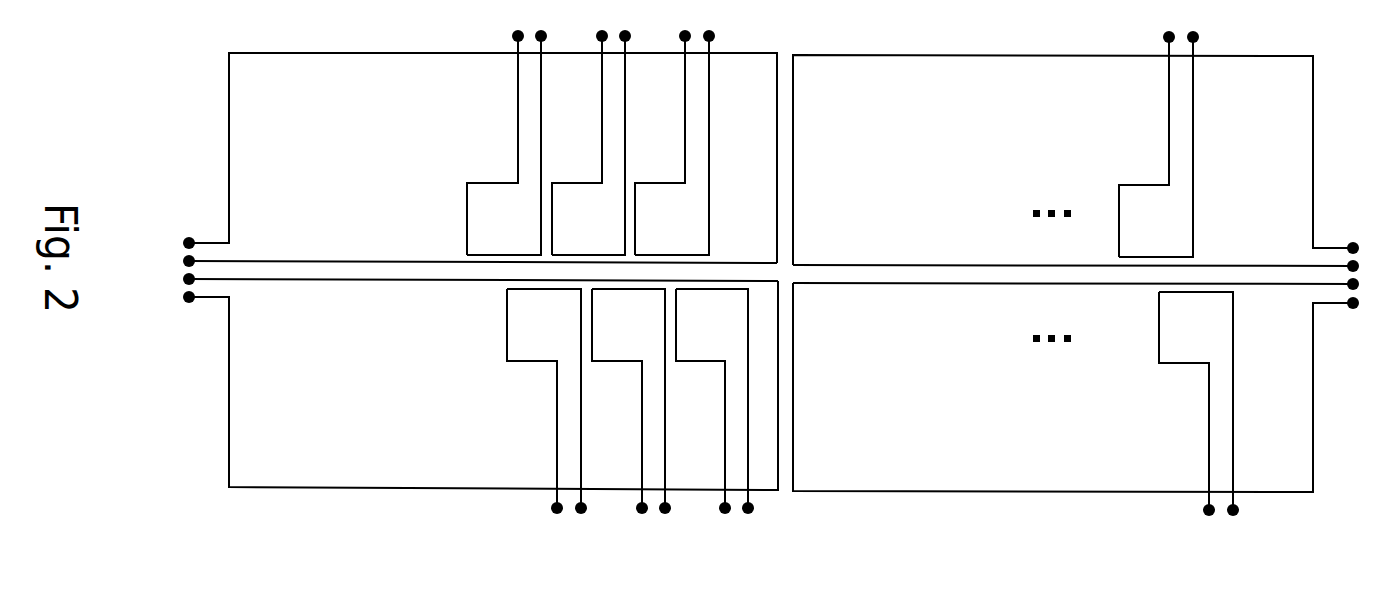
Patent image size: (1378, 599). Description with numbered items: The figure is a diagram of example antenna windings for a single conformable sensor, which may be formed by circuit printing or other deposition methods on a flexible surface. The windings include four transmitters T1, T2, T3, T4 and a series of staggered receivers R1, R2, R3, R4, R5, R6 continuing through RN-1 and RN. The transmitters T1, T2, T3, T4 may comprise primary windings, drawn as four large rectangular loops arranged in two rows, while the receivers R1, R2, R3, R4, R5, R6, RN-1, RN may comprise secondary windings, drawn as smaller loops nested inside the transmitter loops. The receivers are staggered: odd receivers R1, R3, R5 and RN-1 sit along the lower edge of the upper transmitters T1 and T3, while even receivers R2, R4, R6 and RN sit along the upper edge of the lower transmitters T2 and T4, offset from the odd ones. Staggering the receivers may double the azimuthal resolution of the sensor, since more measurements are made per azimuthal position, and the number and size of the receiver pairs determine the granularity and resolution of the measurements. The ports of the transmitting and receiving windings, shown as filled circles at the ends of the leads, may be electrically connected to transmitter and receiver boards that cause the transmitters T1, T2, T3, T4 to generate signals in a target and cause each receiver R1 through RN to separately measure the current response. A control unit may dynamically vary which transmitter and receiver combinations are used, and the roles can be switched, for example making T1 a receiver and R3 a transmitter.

The transmitter T1 is at (480, 160).
The transmitter T2 is at (480, 381).
The transmitter T3 is at (1076, 163).
The transmitter T4 is at (1076, 385).
The staggered receiver R1 is at (507, 142).
The staggered receiver R2 is at (547, 401).
The staggered receiver R3 is at (591, 142).
The staggered receiver R4 is at (631, 401).
The staggered receiver R5 is at (675, 142).
The staggered receiver R6 is at (715, 401).
The staggered receiver RN-1 is at (1159, 144).
The staggered receiver RN is at (1199, 404).